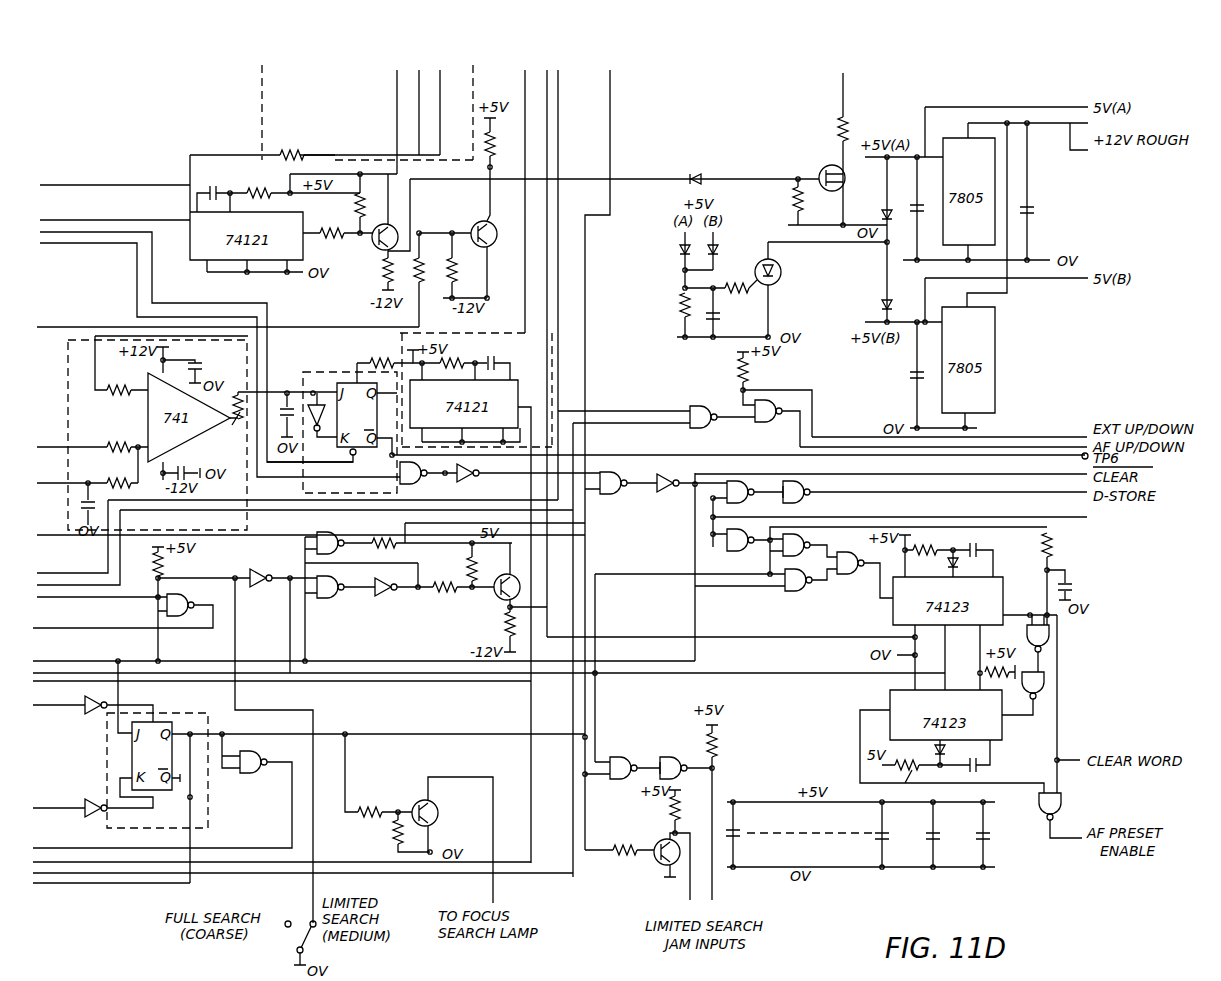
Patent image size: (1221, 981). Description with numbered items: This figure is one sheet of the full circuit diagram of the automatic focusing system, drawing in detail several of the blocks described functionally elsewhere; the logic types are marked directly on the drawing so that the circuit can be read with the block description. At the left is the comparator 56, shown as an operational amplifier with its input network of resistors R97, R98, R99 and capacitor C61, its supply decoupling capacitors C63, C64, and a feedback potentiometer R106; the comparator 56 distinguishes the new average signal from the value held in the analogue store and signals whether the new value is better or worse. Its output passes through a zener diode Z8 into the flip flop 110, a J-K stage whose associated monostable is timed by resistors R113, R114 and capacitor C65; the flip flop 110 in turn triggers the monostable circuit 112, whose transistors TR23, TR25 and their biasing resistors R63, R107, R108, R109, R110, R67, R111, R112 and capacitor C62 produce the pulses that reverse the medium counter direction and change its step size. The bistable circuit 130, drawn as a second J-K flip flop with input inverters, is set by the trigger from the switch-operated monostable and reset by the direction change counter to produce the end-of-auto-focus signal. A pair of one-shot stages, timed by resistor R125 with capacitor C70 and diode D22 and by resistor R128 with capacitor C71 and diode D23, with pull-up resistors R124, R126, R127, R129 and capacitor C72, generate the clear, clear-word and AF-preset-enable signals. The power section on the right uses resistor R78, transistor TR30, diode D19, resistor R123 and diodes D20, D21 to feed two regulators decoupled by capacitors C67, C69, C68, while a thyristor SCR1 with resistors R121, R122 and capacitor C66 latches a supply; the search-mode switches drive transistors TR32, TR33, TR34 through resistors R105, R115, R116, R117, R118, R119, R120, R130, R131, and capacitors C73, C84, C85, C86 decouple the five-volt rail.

The comparator 56 is at (72, 389).
The flip flop 110 is at (332, 362).
The monostable circuit 112 is at (539, 334).
The bistable circuit 130 is at (96, 762).
The resistor R63 is at (262, 147).
The capacitor C62 is at (214, 190).
The resistor R107 is at (313, 183).
The resistor R108 is at (350, 204).
The resistor R109 is at (337, 241).
The resistor R110 is at (370, 274).
The transistor TR23 is at (398, 226).
The resistor R67 is at (500, 143).
The transistor TR25 is at (466, 253).
The resistor R111 is at (432, 280).
The resistor R112 is at (466, 266).
The resistor R97 is at (117, 381).
The resistor R98 is at (92, 454).
The resistor R99 is at (87, 474).
The capacitor C61 is at (72, 504).
The capacitor C63 is at (208, 358).
The capacitor C64 is at (194, 465).
The potentiometer R106 is at (224, 420).
The zener diode Z8 is at (285, 406).
The resistor R113 is at (385, 363).
The resistor R114 is at (458, 355).
The capacitor C65 is at (508, 356).
The resistor R124 is at (727, 372).
The resistor R125 is at (931, 543).
The capacitor C70 is at (991, 544).
The diode D22 is at (936, 567).
The resistor R126 is at (983, 669).
The resistor R127 is at (1066, 579).
The capacitor C72 is at (1074, 585).
The diode D23 is at (924, 752).
The potentiometer R128 is at (906, 781).
The capacitor C71 is at (996, 767).
The capacitor C73 is at (746, 823).
The capacitor C84 is at (895, 824).
The capacitor C85 is at (945, 824).
The capacitor C86 is at (995, 824).
The resistor R129 is at (730, 812).
The resistor R131 is at (619, 841).
The transistor TR34 is at (651, 865).
The resistor R130 is at (657, 811).
The resistor R119 is at (378, 775).
The resistor R120 is at (393, 833).
The transistor TR32 is at (452, 840).
The resistor R105 is at (177, 604).
The resistor R115 is at (383, 535).
The resistor R117 is at (455, 565).
The resistor R116 is at (462, 596).
The transistor TR33 is at (512, 583).
The resistor R118 is at (493, 632).
The resistor R78 is at (858, 141).
The transistor TR30 is at (821, 189).
The diode D19 is at (701, 170).
The resistor R123 is at (822, 201).
The diode D20 is at (872, 199).
The capacitor C67 is at (925, 193).
The capacitor C69 is at (1042, 211).
The diode D21 is at (872, 299).
The capacitor C68 is at (898, 376).
The resistor R121 is at (668, 305).
The resistor R122 is at (736, 281).
The capacitor C66 is at (728, 317).
The silicon controlled rectifier SCR1 is at (788, 269).